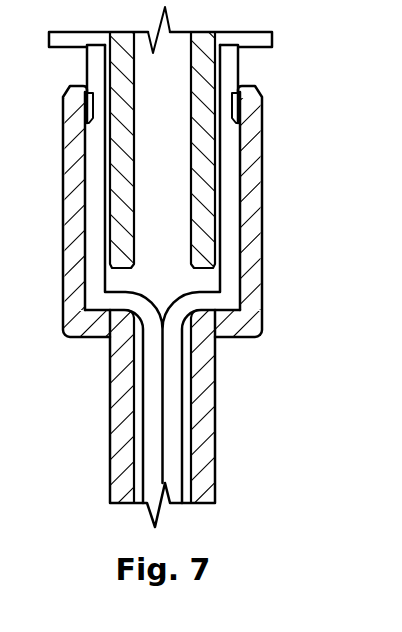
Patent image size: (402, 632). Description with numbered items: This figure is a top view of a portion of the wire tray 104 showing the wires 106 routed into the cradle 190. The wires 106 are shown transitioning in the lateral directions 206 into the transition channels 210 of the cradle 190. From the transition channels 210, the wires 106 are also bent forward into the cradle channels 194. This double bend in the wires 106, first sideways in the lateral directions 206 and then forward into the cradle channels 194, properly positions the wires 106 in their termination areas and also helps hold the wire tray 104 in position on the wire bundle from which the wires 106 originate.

The wire tray 104 is at (200, 460).
The wires 106 is at (178, 428).
The cradle 190 is at (268, 249).
The cradle channels 194 is at (93, 164).
The lateral directions 206 is at (152, 197).
The transition channels 210 is at (122, 278).